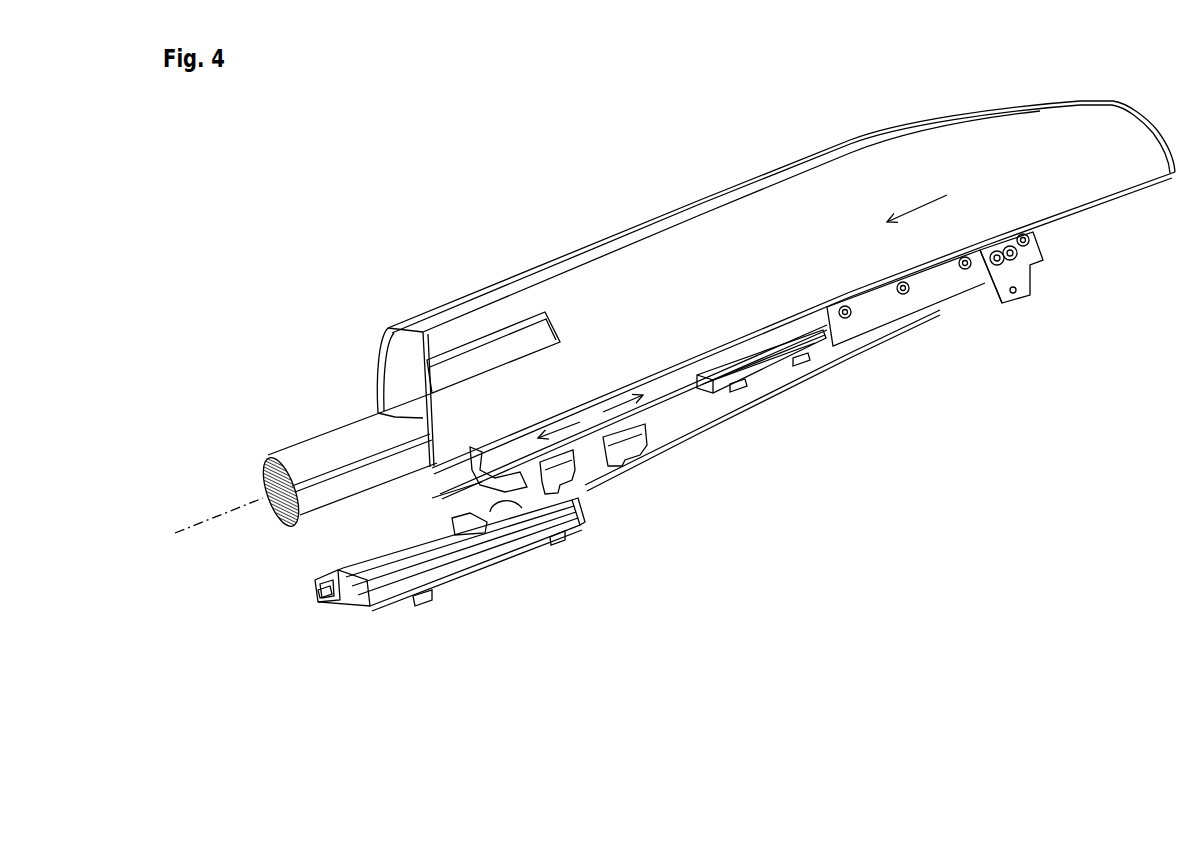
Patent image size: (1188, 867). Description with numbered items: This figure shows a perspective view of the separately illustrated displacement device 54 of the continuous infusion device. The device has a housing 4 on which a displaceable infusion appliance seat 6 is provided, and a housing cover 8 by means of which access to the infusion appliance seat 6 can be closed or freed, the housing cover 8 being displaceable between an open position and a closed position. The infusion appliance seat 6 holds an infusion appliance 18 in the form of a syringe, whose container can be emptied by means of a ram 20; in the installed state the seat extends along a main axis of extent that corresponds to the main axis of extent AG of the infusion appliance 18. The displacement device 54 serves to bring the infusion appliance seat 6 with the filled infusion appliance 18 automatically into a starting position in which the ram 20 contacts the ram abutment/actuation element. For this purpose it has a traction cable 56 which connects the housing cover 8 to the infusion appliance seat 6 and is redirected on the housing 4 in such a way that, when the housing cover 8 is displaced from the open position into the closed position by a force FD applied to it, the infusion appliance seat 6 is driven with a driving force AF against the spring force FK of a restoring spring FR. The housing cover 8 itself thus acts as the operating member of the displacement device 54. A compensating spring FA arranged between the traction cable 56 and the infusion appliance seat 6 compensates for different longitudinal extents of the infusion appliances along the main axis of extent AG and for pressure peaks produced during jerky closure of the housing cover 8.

The housing 4 is at (472, 555).
The infusion appliance seat 6 is at (657, 385).
The housing cover 8 is at (792, 176).
The infusion appliance 18 is at (370, 419).
The ram 20 is at (300, 460).
The displacement device 54 is at (345, 612).
The traction cable 56 is at (727, 433).
The main axis of extent AG is at (224, 516).
The force FD is at (915, 205).
The spring force FK is at (460, 505).
The driving force AF is at (590, 427).
The restoring spring FR is at (653, 433).
The compensating spring FA is at (545, 548).